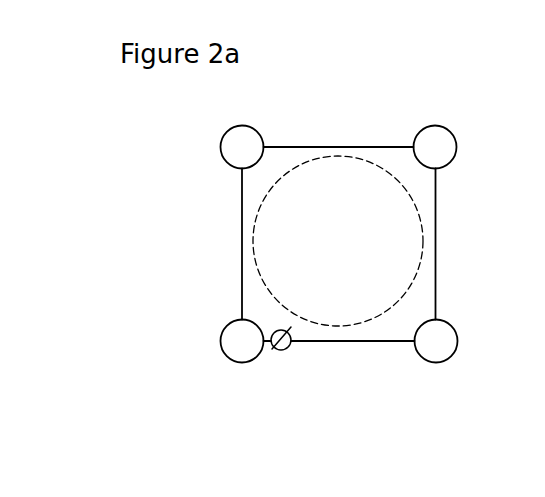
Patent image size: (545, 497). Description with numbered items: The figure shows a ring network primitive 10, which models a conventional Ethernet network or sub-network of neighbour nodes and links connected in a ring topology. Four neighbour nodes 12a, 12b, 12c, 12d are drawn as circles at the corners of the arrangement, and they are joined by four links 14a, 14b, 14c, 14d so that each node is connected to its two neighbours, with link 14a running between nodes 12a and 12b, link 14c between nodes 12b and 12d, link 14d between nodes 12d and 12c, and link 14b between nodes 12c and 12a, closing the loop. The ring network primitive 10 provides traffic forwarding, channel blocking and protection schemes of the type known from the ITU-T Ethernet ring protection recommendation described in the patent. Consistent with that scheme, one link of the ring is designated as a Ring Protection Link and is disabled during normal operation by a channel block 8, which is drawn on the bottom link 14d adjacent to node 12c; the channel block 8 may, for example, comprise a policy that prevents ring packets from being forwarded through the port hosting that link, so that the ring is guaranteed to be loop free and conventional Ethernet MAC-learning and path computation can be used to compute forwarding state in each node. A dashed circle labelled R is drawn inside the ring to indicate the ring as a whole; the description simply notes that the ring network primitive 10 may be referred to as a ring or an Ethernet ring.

The ring network primitive 10 is at (185, 161).
The neighbour node 12a is at (245, 127).
The neighbour node 12b is at (451, 133).
The neighbour node 12c is at (232, 360).
The neighbour node 12d is at (447, 361).
The link 14a is at (317, 146).
The link 14b is at (241, 249).
The link 14c is at (437, 238).
The link 14d is at (345, 341).
The channel block 8 is at (287, 350).
The region of influence R is at (338, 241).